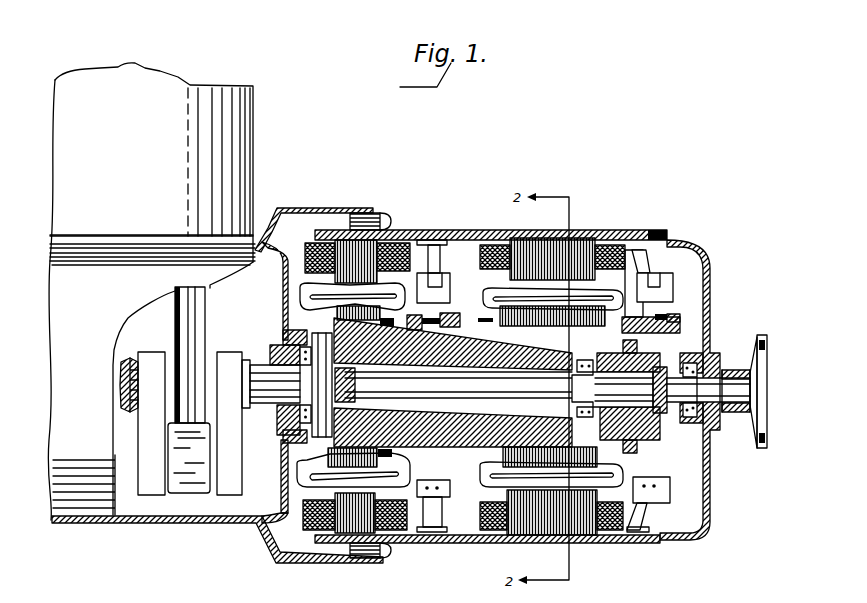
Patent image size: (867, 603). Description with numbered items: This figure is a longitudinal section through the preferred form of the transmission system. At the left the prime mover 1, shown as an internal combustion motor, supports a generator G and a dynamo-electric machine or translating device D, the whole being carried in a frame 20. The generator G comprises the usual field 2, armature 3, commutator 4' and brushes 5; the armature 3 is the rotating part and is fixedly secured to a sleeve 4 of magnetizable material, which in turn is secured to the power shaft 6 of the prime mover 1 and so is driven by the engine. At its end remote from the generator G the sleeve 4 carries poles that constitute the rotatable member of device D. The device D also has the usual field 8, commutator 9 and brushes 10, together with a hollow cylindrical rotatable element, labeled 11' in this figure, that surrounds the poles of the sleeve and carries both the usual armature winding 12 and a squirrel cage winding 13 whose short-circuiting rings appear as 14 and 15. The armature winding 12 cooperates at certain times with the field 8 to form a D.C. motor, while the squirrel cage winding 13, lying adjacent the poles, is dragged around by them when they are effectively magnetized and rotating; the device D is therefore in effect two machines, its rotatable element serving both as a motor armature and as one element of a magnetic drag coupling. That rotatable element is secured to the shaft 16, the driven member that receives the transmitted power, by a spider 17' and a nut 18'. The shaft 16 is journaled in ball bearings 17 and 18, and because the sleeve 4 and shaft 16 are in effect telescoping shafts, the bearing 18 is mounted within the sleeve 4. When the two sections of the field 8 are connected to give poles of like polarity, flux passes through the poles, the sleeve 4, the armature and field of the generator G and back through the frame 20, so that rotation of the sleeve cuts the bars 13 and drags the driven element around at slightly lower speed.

The prime mover 1 is at (250, 168).
The field 2 is at (312, 246).
The armature 3 is at (303, 290).
The sleeve 4 is at (383, 371).
The commutator 4' is at (485, 323).
The brushes 5 is at (447, 276).
The power shaft 6 is at (263, 360).
The field 8 is at (605, 252).
The commutator 9 is at (672, 310).
The brushes 10 is at (668, 276).
The armature lamination 11' is at (466, 386).
The armature winding 12 is at (450, 303).
The squirrel cage winding 13 is at (622, 448).
The short-circuiting ring 14 is at (372, 375).
The short-circuiting ring 15 is at (604, 356).
The shaft 16 is at (750, 386).
The ball bearing 17 is at (712, 368).
The spider 17' is at (686, 390).
The ball bearing 18 is at (585, 379).
The nut 18' is at (681, 402).
The frame 20 is at (438, 248).
The generator G is at (413, 234).
The dynamo-electric machine or translating device D is at (478, 232).